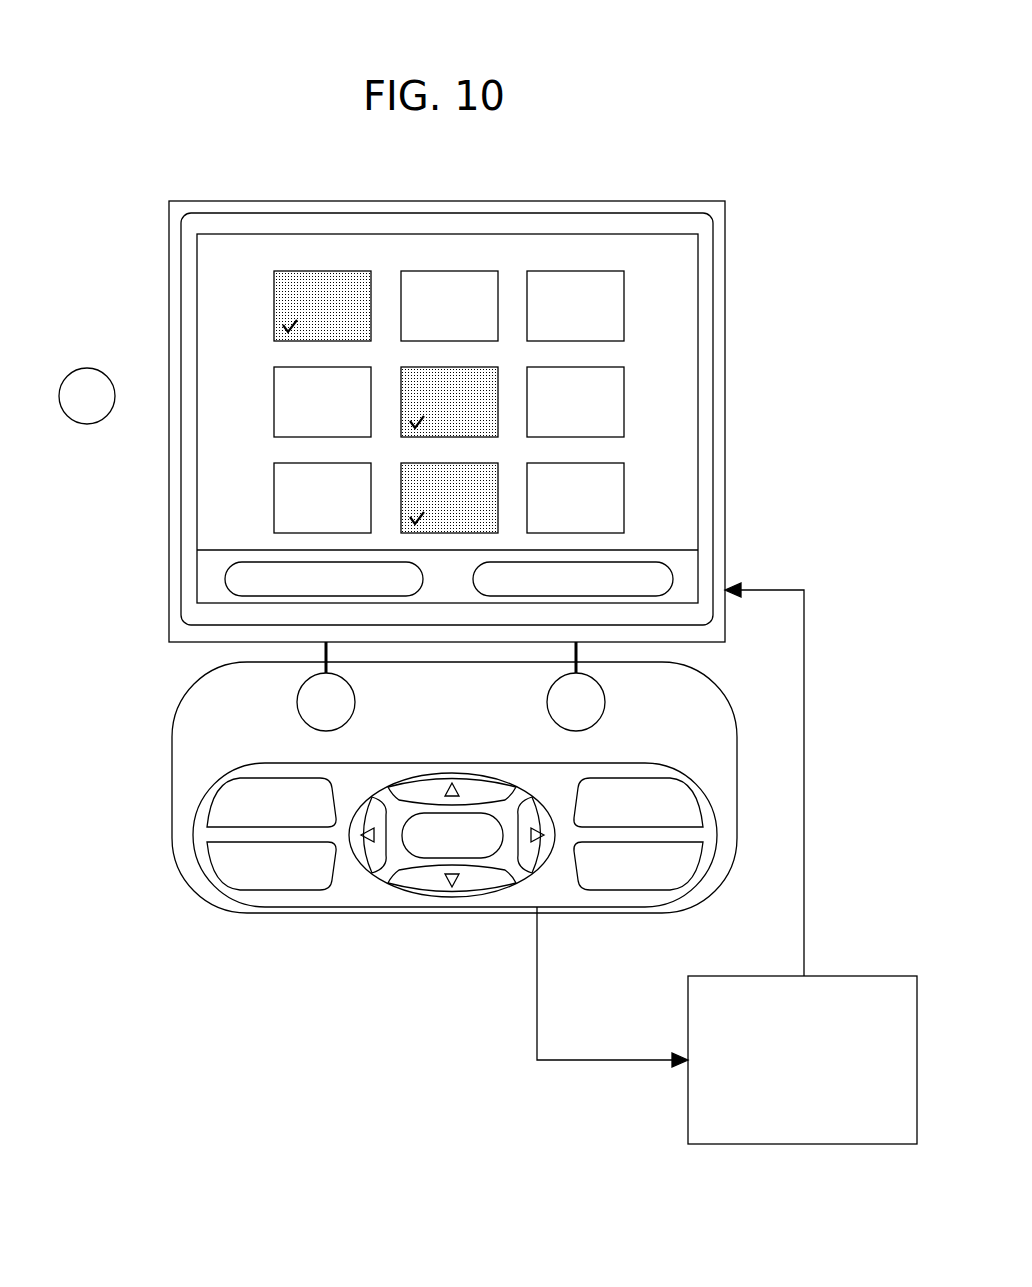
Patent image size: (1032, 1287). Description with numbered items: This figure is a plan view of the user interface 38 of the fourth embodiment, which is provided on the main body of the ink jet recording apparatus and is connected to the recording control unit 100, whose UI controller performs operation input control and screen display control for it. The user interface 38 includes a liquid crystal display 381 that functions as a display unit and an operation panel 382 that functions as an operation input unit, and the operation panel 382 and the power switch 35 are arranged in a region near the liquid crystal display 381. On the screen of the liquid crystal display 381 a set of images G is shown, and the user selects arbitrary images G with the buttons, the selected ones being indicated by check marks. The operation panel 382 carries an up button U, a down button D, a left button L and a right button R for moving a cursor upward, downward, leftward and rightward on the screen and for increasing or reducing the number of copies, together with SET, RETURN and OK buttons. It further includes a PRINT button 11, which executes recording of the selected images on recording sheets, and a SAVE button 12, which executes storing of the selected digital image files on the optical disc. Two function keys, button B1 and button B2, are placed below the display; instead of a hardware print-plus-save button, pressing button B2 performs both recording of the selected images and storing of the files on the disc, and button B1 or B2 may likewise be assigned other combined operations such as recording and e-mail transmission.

The images G is at (462, 285).
The power switch 35 is at (90, 424).
The user interface 38 is at (63, 612).
The liquid crystal display 381 is at (168, 611).
The operation panel 382 is at (172, 770).
The button B1 is at (346, 688).
The button B2 is at (600, 688).
The up button U is at (488, 778).
The down button D is at (492, 880).
The left button L is at (370, 860).
The right button R is at (540, 855).
The PRINT button 11 is at (644, 778).
The SAVE button 12 is at (648, 880).
The recording control unit 100 is at (838, 976).